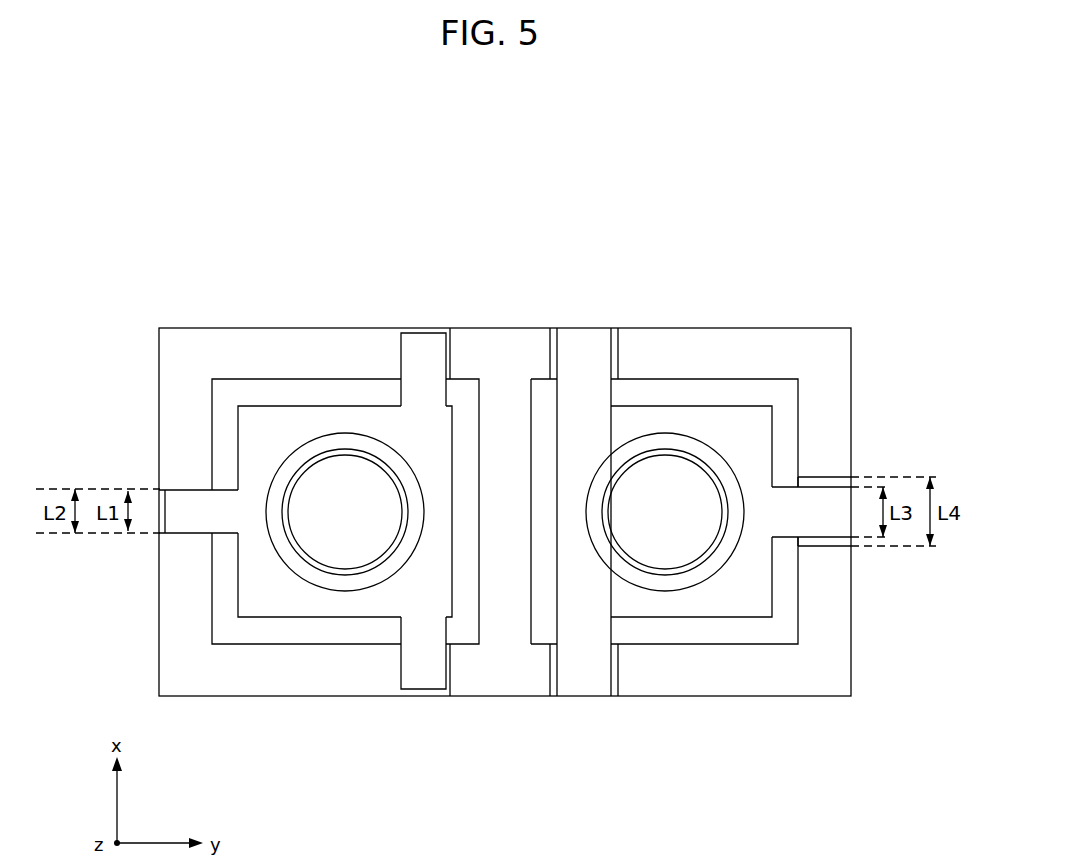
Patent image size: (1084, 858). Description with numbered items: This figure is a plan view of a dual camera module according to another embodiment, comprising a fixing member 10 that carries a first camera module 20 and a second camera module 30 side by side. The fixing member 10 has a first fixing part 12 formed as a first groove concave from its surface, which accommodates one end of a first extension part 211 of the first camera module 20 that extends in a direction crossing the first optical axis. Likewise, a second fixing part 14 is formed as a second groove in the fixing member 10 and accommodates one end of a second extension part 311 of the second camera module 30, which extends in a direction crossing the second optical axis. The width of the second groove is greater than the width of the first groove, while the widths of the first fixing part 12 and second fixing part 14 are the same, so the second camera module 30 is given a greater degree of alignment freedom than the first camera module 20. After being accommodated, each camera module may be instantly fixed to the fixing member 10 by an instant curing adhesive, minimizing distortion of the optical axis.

The fixing member 10 is at (196, 330).
The first camera module 20 is at (318, 400).
The second camera module 30 is at (705, 400).
The first fixing part 12 is at (177, 489).
The second fixing part 14 is at (827, 478).
The first extension part 211 is at (187, 520).
The second extension part 311 is at (825, 508).